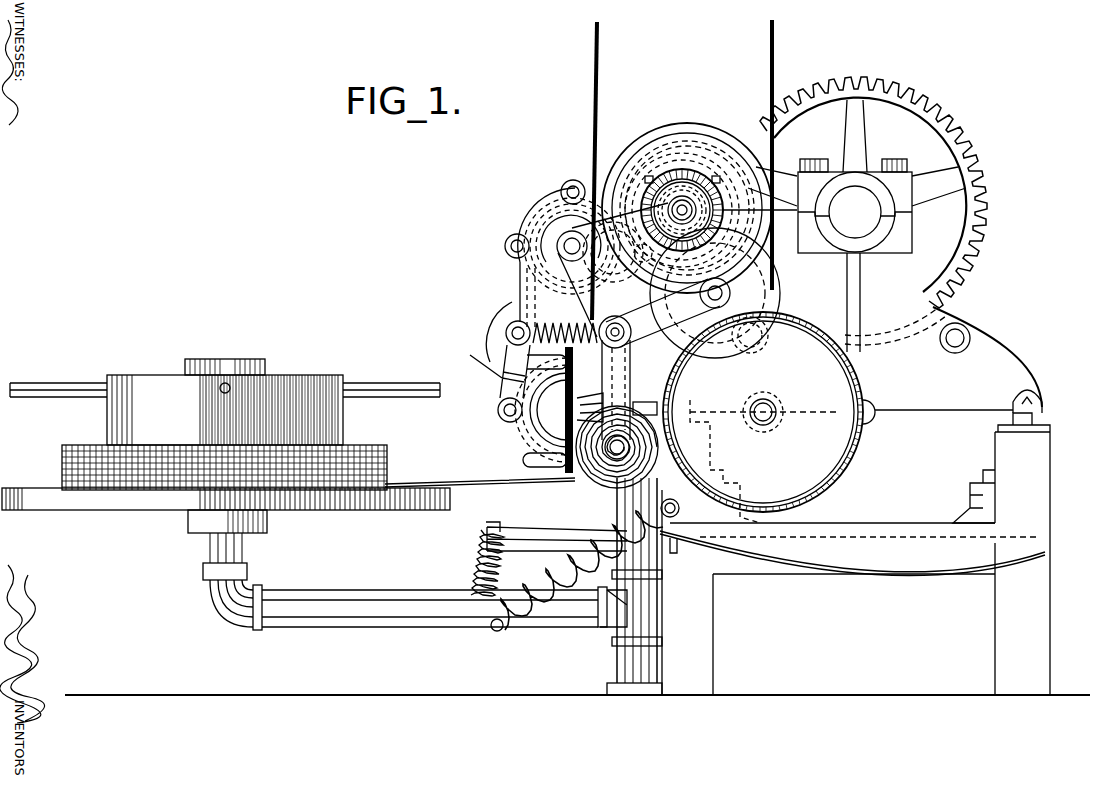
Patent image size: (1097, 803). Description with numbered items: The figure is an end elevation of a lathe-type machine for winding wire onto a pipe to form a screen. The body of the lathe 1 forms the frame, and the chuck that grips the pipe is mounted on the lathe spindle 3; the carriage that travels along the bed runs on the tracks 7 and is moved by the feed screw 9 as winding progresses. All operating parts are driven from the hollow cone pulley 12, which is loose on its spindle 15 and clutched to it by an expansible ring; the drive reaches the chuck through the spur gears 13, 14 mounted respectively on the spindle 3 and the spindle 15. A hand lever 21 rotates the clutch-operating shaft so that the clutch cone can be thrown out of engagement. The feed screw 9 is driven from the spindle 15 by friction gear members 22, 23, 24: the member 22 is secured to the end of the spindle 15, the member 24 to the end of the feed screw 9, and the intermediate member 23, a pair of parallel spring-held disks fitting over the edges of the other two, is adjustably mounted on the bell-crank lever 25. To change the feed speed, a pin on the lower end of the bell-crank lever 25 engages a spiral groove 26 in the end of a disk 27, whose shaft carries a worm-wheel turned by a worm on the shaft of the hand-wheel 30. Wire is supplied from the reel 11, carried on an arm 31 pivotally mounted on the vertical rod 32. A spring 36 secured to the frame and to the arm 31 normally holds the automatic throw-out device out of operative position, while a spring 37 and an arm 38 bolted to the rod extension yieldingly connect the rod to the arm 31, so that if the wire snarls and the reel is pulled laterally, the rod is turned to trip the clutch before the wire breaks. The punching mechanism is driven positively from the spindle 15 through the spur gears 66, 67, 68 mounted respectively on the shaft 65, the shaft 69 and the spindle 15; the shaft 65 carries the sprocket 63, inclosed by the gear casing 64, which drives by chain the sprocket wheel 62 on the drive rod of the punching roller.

The body of the lathe 1 is at (1032, 488).
The lathe spindle 3 is at (857, 217).
The tracks 7 is at (1030, 415).
The feed screw 9 is at (777, 420).
The reel 11 is at (310, 378).
The cone pulley 12 is at (636, 138).
The spur gear 13 is at (955, 128).
The spur gear 14 is at (718, 147).
The spindle 15 is at (676, 207).
The hand lever 21 is at (527, 462).
The friction gear member 22 is at (684, 178).
The intermediate friction gear member 23 is at (765, 285).
The friction gear member 24 is at (822, 382).
The bell-crank lever 25 is at (663, 325).
The spiral groove 26 is at (590, 487).
The disk 27 is at (610, 500).
The hand-wheel 30 is at (560, 457).
The arm 31 is at (393, 623).
The vertical rod 32 is at (627, 666).
The spring 36 is at (560, 593).
The spring 37 is at (473, 560).
The arm 38 is at (520, 538).
The sprocket wheel 62 is at (537, 385).
The sprocket 63 is at (540, 213).
The gear casing 64 is at (533, 227).
The shaft 65 is at (577, 233).
The spur gear 66 is at (567, 210).
The spur gear 67 is at (616, 225).
The spur gear 68 is at (680, 188).
The shaft 69 is at (527, 273).